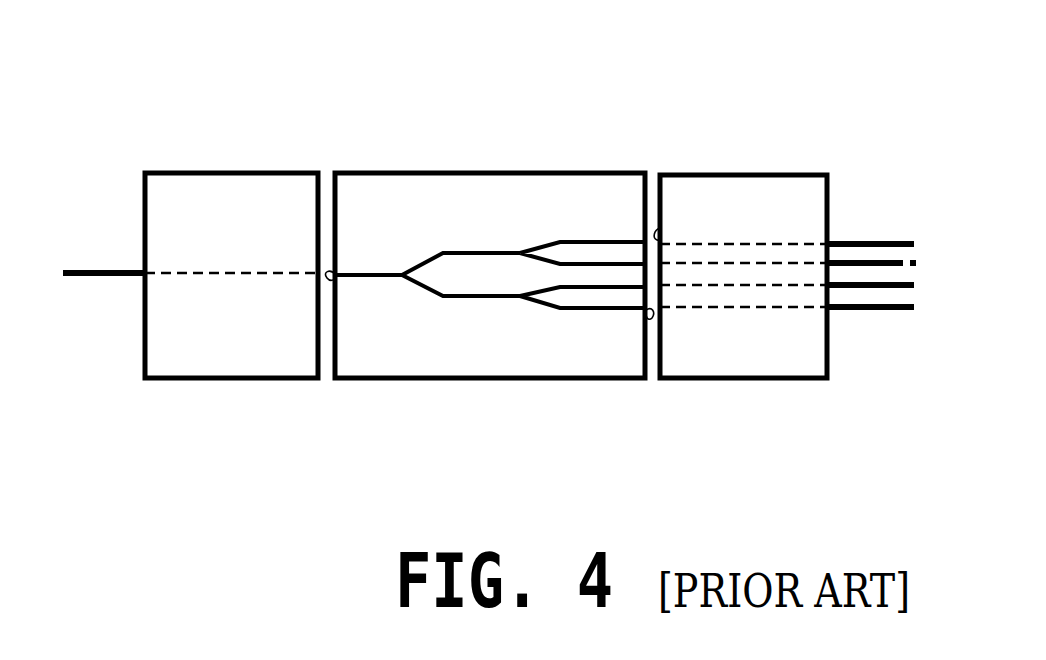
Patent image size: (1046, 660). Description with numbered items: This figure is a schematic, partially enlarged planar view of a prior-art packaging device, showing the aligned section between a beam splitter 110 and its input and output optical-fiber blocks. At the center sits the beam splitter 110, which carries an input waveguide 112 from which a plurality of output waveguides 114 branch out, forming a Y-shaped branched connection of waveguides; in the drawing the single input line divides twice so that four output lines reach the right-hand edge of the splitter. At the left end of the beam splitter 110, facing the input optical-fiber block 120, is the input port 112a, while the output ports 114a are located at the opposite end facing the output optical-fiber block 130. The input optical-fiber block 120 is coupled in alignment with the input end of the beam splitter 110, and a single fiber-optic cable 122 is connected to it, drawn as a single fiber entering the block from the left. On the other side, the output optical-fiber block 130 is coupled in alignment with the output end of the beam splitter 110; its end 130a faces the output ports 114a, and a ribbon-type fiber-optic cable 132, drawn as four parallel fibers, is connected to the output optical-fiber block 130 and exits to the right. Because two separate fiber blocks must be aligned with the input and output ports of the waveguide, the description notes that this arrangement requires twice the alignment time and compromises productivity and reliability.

The beam splitter 110 is at (503, 203).
The input waveguide 112 is at (365, 272).
The input port 112a is at (336, 277).
The output waveguides 114 is at (595, 242).
The output ports 114a is at (650, 314).
The input optical-fiber block 120 is at (262, 202).
The single fiber-optic cable 122 is at (95, 267).
The output optical-fiber block 130 is at (763, 205).
The end of output optical-fiber block 130a is at (663, 227).
The ribbon-type fiber-optic cable 132 is at (860, 242).